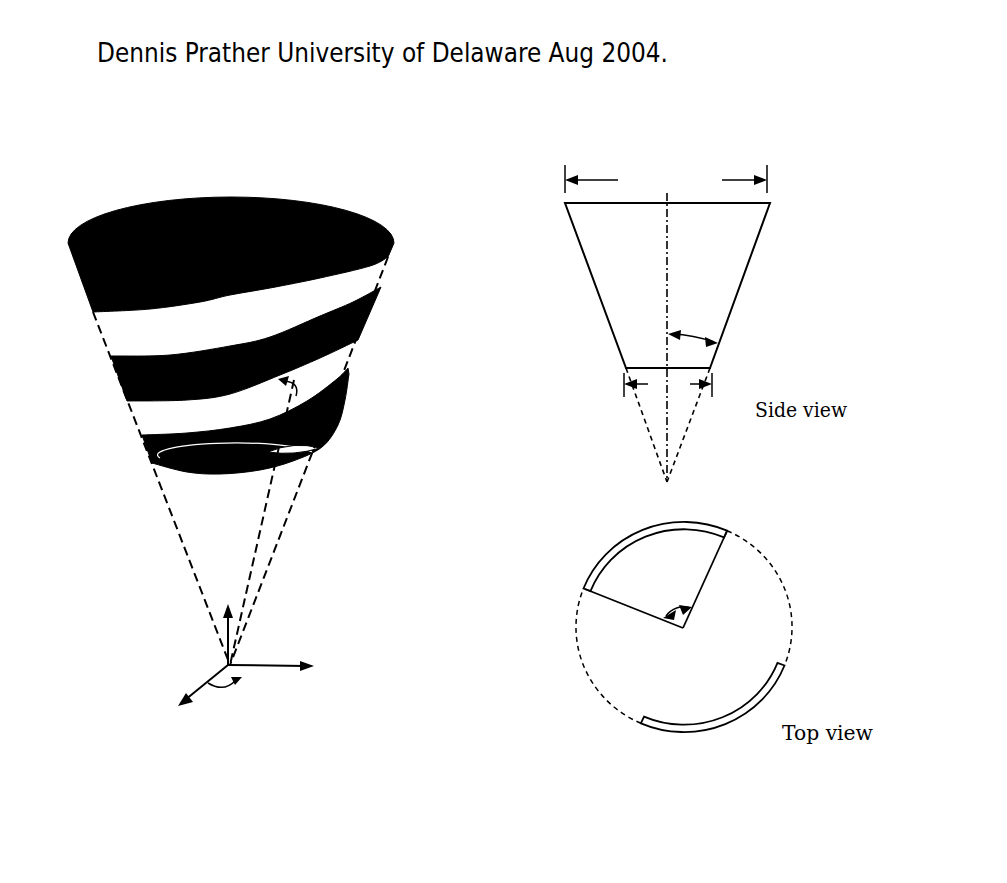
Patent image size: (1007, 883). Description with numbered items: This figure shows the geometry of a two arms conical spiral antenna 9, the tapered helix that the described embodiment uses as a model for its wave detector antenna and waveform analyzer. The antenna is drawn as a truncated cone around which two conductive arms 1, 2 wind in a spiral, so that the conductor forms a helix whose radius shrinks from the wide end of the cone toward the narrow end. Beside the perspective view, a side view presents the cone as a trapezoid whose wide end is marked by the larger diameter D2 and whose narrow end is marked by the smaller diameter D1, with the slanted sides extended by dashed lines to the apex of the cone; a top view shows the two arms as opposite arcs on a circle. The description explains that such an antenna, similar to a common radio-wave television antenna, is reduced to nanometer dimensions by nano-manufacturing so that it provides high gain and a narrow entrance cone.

The two arms conical spiral antenna 9 is at (325, 359).
The bottom diameter D1 of the cone 1 is at (668, 386).
The top diameter D2 of the cone 2 is at (666, 182).
The bottom diameter of the cone D1 is at (668, 386).
The top diameter of the cone D2 is at (666, 182).